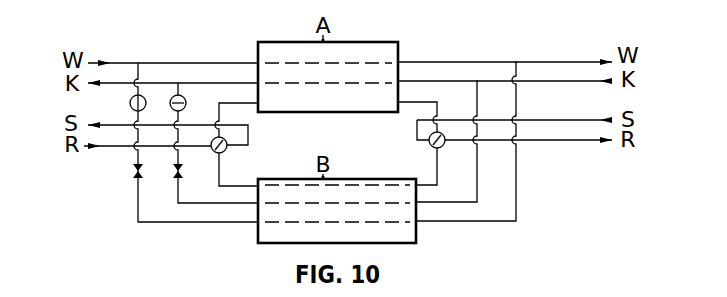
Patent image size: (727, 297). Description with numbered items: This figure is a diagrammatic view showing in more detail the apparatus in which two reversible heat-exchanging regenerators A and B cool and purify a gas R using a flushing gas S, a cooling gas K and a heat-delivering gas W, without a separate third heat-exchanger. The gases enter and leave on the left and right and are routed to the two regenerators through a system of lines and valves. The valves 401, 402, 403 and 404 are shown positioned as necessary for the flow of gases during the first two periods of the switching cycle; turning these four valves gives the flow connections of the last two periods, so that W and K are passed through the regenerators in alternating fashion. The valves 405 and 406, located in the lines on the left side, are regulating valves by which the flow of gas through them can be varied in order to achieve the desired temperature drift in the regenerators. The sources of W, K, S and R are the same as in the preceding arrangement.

The valve 401 is at (130, 103).
The valve 402 is at (184, 97).
The valve 403 is at (224, 151).
The valve 404 is at (432, 147).
The regulating valve 405 is at (133, 172).
The regulating valve 406 is at (175, 173).